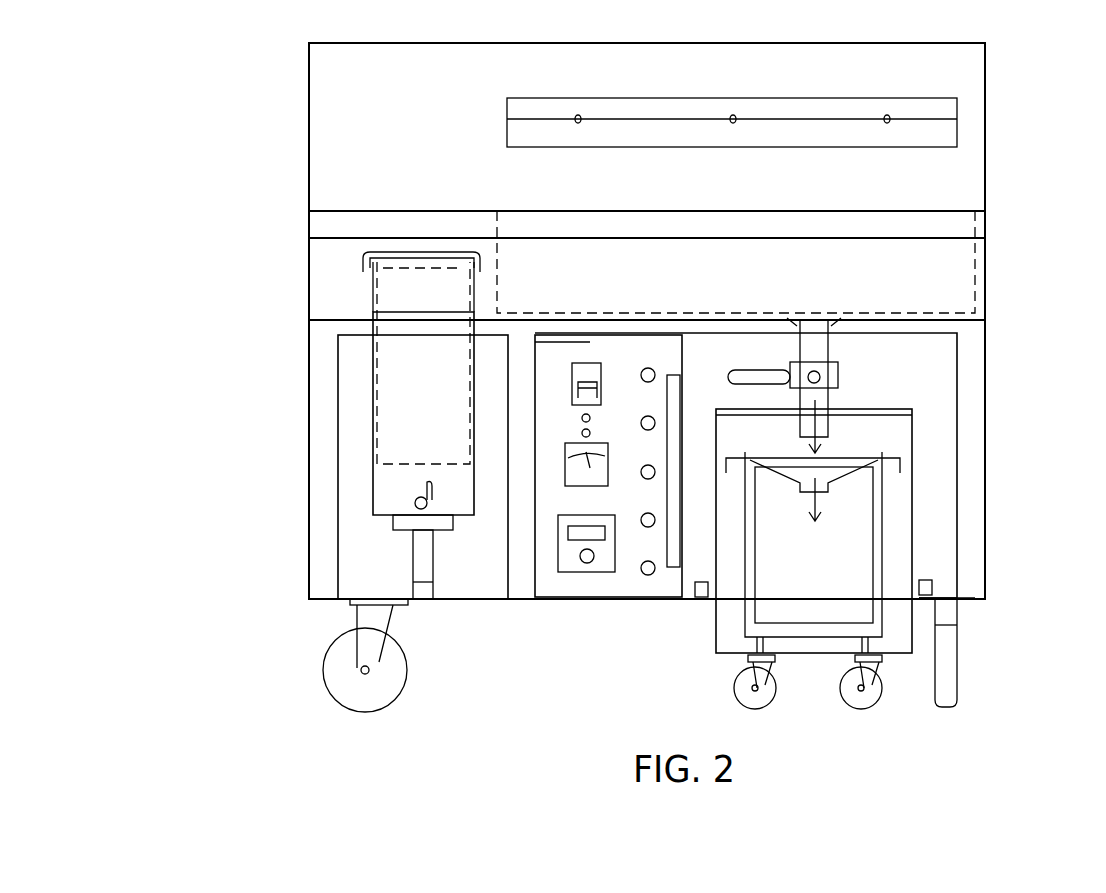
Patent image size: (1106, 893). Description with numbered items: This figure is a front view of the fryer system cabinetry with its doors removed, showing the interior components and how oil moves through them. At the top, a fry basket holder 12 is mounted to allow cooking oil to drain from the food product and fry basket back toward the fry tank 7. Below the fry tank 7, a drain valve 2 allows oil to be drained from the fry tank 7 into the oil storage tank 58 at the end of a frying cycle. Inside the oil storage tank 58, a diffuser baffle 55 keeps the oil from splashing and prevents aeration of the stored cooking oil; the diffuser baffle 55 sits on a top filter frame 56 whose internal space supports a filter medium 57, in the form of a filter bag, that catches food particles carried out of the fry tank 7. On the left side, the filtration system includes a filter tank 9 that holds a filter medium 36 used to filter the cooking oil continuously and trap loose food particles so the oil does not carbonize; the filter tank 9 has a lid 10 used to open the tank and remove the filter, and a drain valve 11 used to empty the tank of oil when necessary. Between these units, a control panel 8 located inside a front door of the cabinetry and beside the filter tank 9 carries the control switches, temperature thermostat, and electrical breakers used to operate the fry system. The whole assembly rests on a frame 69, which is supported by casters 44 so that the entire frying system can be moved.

The drain valve 2 is at (838, 378).
The fry tank 7 is at (975, 290).
The control panel 8 is at (617, 600).
The filter tank 9 is at (374, 425).
The lid 10 is at (365, 262).
The drain valve 11 is at (412, 500).
The fry basket holder 12 is at (957, 135).
The filter medium 36 is at (397, 347).
The casters 44 is at (952, 670).
The diffuser baffle 55 is at (850, 470).
The top filter frame 56 is at (885, 547).
The filter medium 57 is at (873, 593).
The oil storage tank 58 is at (912, 427).
The frame 69 is at (700, 600).